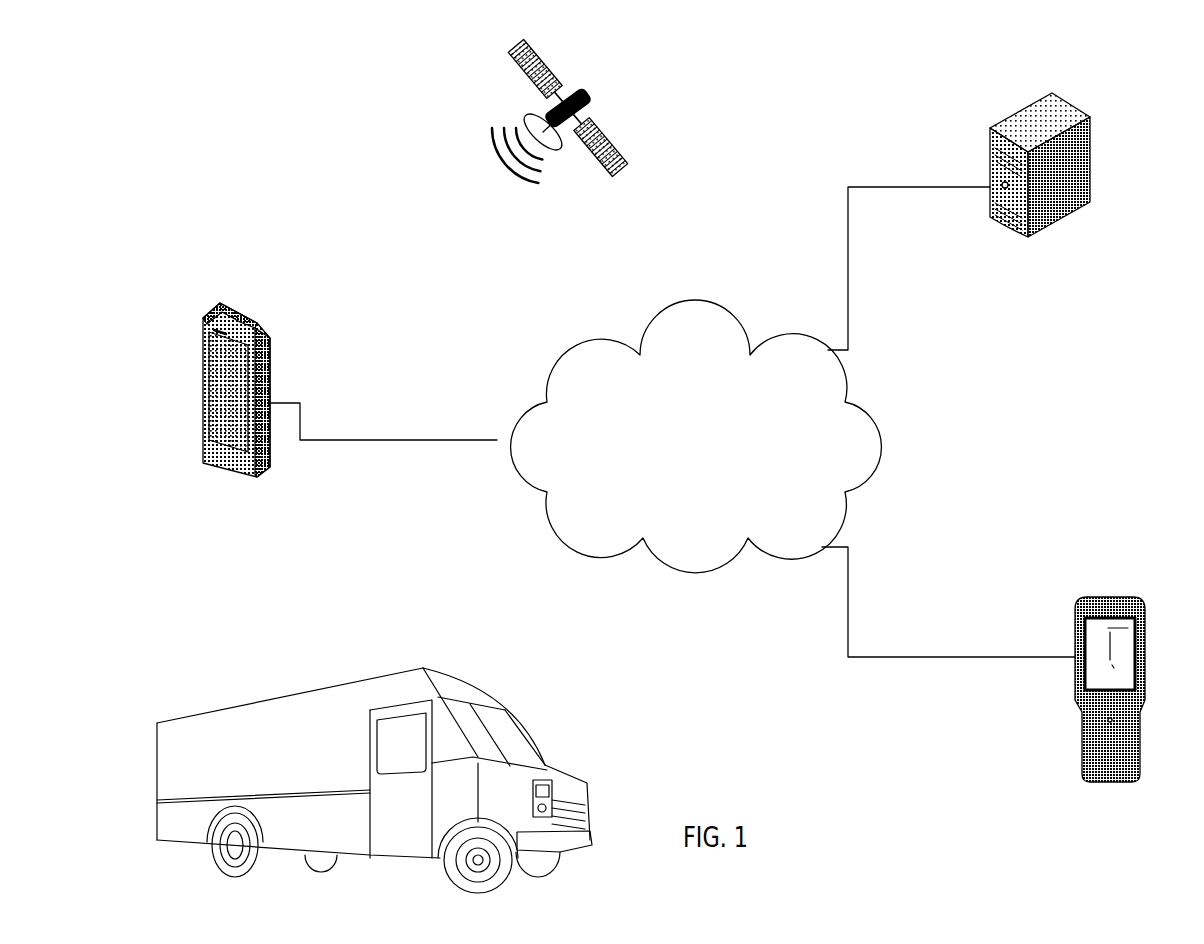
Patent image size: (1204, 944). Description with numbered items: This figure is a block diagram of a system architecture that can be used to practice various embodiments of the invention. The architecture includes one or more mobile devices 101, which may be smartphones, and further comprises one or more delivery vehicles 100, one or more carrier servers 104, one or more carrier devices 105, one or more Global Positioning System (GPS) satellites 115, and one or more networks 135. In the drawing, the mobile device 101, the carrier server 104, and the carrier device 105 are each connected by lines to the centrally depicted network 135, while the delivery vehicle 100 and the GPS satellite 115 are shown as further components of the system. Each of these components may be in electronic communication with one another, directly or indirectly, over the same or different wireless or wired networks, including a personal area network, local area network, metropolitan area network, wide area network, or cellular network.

The delivery vehicle 100 is at (340, 665).
The mobile device 101 is at (242, 313).
The carrier server 104 is at (1075, 107).
The carrier device 105 is at (1105, 595).
The Global Positioning System (GPS) satellite 115 is at (603, 75).
The network 135 is at (696, 436).